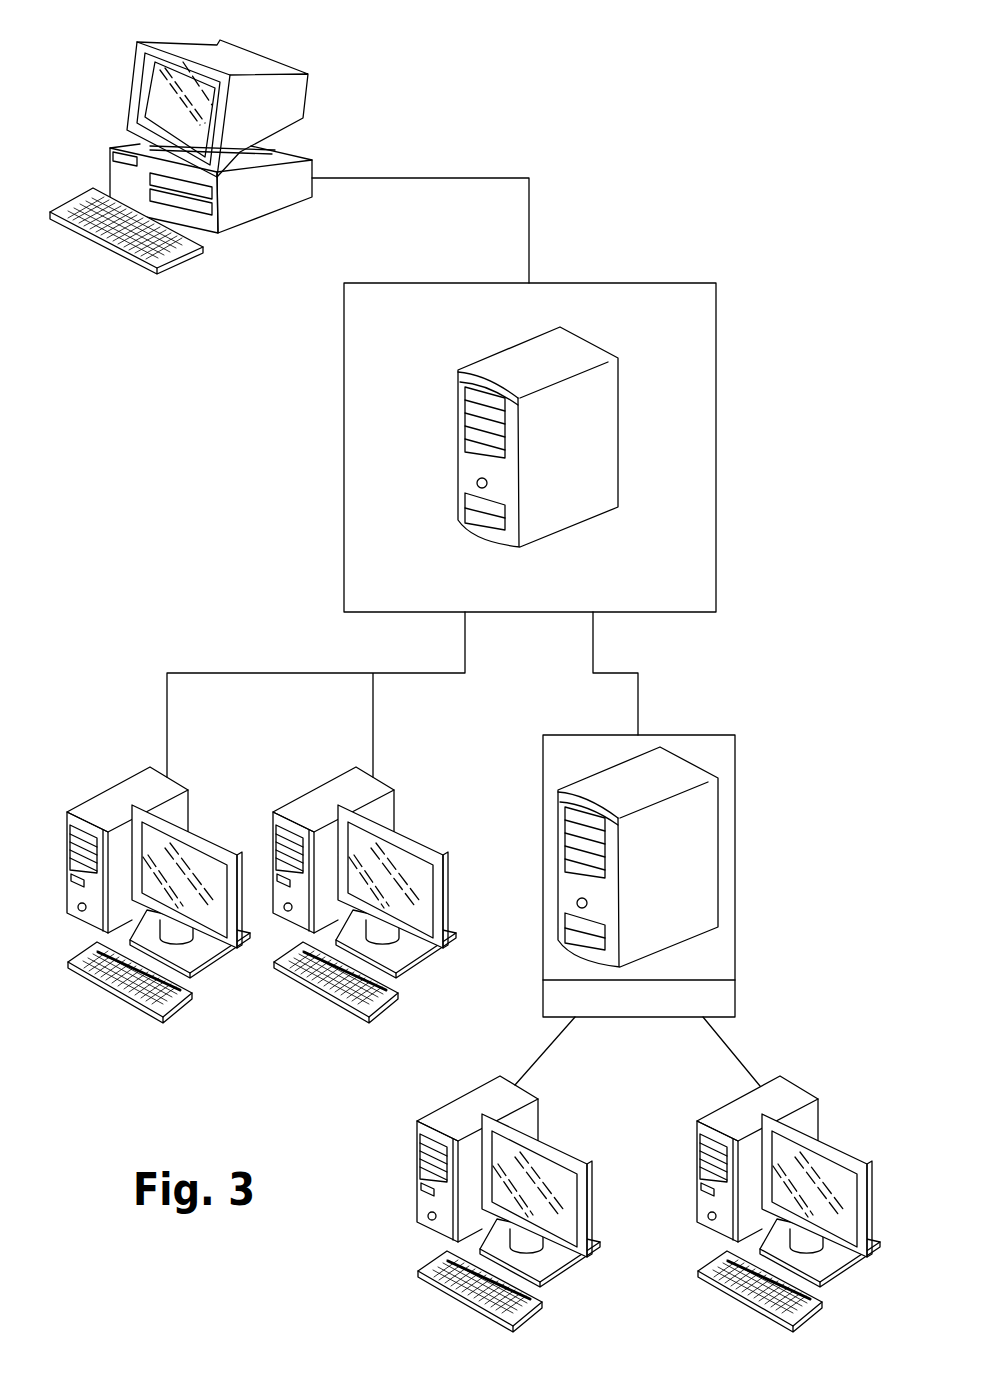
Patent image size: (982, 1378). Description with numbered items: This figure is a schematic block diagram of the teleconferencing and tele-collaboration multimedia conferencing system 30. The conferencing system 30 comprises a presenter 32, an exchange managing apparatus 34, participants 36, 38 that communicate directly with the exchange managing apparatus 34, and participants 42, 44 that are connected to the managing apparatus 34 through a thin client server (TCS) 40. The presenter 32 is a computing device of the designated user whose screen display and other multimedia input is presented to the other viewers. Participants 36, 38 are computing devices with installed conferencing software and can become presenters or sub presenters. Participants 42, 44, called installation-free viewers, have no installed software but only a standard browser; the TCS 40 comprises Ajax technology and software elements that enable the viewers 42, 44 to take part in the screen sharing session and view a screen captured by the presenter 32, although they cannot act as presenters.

The conferencing system 30 is at (765, 125).
The presenter 32 is at (121, 143).
The exchange managing apparatus 34 is at (716, 442).
The participant 36 is at (620, 437).
The participant 38 is at (182, 783).
The thin client server 40 is at (735, 867).
The installation-free viewer 42 is at (812, 1087).
The installation-free viewer 44 is at (532, 1092).